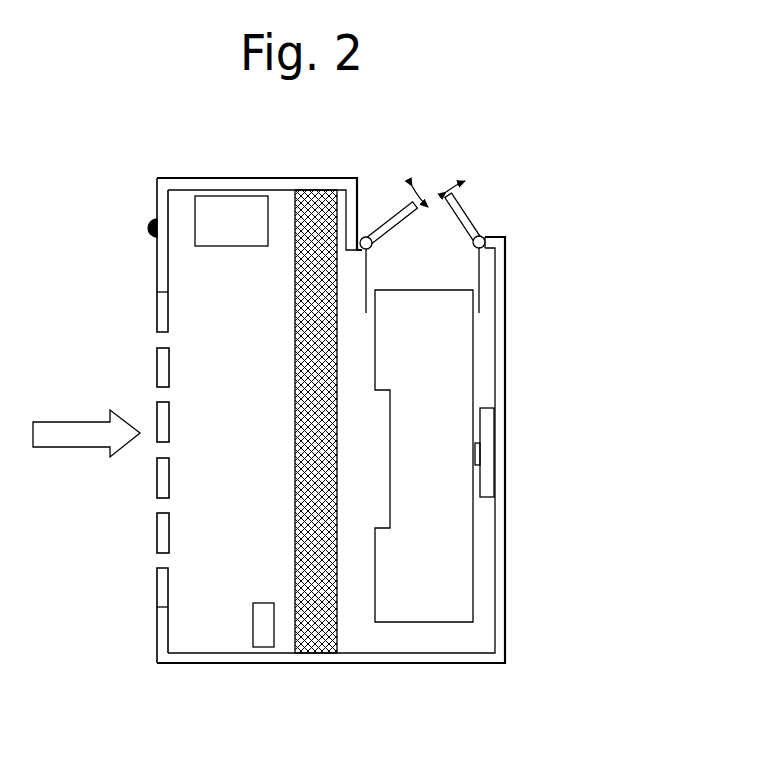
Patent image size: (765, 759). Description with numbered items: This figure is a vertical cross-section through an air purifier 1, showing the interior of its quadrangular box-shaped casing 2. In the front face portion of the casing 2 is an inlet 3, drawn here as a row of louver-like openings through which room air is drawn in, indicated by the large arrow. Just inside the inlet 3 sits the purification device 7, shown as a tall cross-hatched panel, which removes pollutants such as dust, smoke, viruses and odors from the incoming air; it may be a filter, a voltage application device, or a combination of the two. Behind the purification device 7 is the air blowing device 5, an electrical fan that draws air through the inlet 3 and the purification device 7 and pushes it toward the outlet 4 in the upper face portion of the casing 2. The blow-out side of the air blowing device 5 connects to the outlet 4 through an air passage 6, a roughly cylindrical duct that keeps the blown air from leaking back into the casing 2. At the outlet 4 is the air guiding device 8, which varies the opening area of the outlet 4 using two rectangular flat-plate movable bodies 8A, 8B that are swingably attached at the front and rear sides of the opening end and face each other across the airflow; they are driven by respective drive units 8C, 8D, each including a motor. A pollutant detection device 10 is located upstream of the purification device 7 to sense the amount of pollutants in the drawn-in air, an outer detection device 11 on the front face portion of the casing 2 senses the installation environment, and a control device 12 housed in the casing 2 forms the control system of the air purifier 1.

The air purifier 1 is at (147, 166).
The casing 2 is at (157, 276).
The inlet 3 is at (157, 521).
The outlet 4 is at (445, 230).
The air blowing device 5 is at (452, 537).
The air passage 6 is at (480, 277).
The purification device 7 is at (315, 653).
The air guiding device 8 is at (472, 210).
The movable body 8A is at (393, 208).
The movable body 8B is at (470, 220).
The drive unit 8C is at (367, 236).
The drive unit 8D is at (486, 235).
The pollutant detection device 10 is at (263, 647).
The outer detection device 11 is at (145, 226).
The control device 12 is at (232, 200).